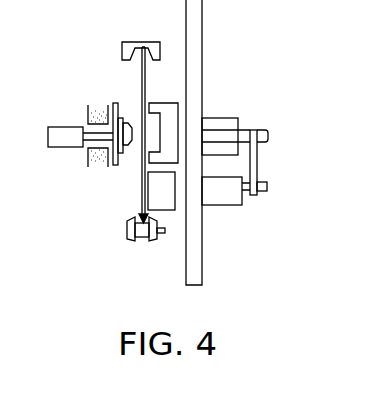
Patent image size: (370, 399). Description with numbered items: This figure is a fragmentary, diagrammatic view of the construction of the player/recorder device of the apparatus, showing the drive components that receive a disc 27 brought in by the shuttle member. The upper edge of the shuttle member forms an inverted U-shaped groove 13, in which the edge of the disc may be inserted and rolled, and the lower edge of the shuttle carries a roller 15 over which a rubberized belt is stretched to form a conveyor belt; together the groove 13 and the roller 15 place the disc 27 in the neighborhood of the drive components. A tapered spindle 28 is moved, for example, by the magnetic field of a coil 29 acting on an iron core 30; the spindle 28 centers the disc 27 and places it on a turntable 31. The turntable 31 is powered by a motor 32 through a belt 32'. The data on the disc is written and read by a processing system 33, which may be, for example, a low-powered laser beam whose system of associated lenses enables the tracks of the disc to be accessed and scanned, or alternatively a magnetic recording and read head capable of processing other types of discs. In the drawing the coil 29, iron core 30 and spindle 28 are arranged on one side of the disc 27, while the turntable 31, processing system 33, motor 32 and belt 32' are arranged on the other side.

The inverted U-shaped groove 13 is at (143, 45).
The disc 27 is at (142, 90).
The coil 29 is at (98, 107).
The iron core 30 is at (62, 139).
The tapered spindle 28 is at (116, 166).
The turntable 31 is at (167, 117).
The processing system 33 is at (163, 204).
The roller 15 is at (129, 242).
The belt 32' is at (267, 146).
The motor 32 is at (234, 222).